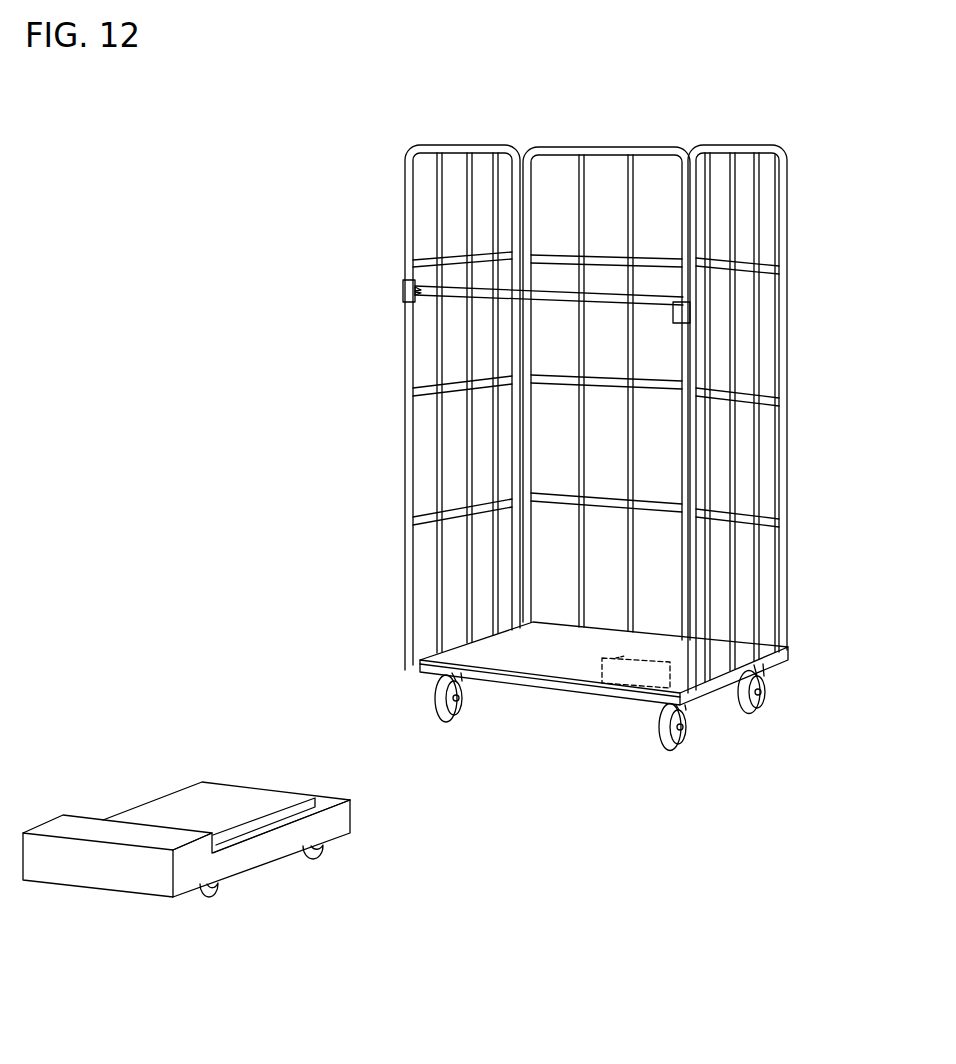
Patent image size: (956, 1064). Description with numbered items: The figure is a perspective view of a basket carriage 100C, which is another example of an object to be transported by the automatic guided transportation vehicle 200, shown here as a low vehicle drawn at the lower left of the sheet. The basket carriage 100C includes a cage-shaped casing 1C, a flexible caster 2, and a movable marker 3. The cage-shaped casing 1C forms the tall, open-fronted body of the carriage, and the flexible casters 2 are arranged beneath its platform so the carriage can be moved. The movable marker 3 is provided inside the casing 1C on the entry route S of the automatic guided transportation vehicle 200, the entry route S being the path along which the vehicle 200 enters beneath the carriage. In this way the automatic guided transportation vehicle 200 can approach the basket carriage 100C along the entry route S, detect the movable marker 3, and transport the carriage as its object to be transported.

The basket carriage 100C is at (396, 126).
The cage-shaped casing 1C is at (786, 452).
The flexible caster 2 is at (410, 702).
The movable marker 3 is at (667, 662).
The entry route S is at (572, 716).
The automatic guided transportation vehicle 200 is at (129, 760).